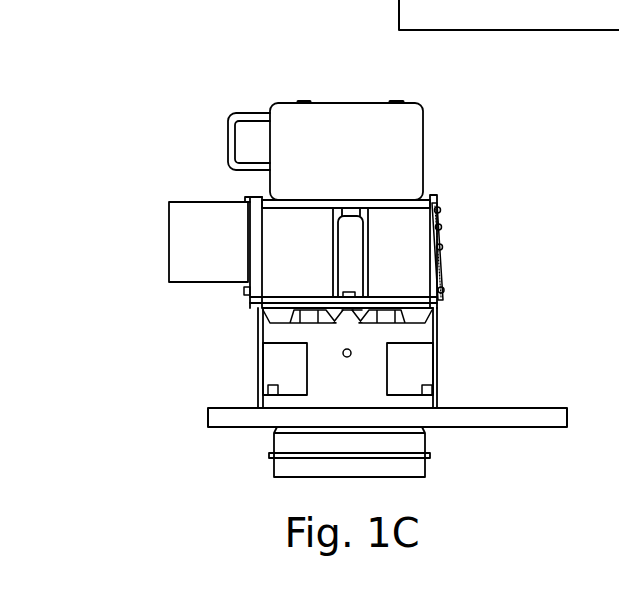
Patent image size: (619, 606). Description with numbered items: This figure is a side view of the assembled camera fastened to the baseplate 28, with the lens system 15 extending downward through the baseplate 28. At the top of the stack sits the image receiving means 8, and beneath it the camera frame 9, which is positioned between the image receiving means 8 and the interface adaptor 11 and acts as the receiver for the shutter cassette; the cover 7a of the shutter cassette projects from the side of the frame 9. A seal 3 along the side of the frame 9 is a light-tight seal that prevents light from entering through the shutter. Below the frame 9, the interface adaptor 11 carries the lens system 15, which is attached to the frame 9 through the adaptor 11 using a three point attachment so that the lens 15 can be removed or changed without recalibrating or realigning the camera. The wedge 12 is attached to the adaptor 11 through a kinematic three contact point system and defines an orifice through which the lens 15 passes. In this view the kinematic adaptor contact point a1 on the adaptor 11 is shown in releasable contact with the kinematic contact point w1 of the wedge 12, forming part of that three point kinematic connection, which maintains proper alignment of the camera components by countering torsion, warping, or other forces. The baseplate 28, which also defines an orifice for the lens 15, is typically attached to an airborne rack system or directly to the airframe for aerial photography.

The image receiving means 8 is at (390, 146).
The cover 7a is at (168, 225).
The camera frame 9 is at (407, 237).
The seal 3 is at (442, 255).
The interface adaptor 11 is at (258, 300).
The kinematic adaptor contact point a1 is at (343, 311).
The kinematic contact point w1 is at (360, 312).
The wedge 12 is at (420, 333).
The baseplate 28 is at (522, 418).
The lens system 15 is at (428, 437).